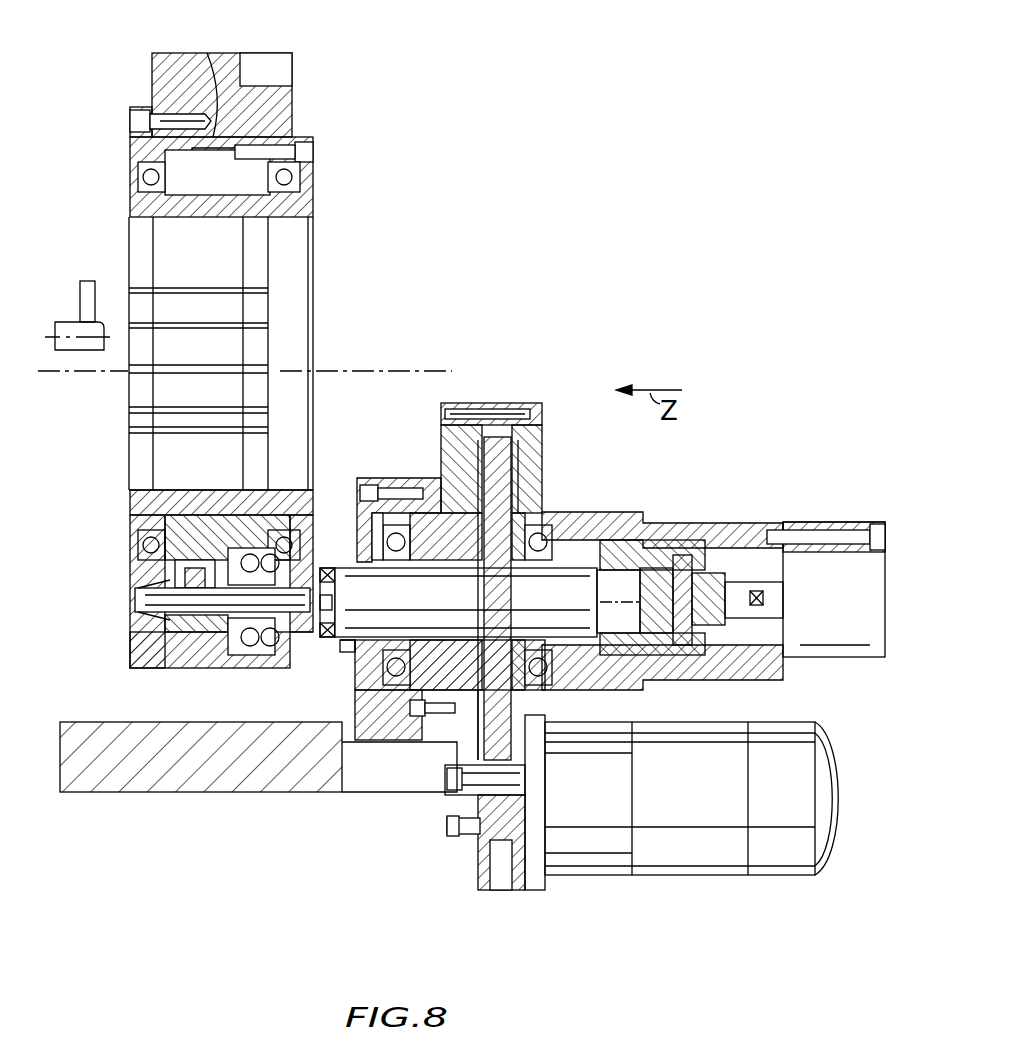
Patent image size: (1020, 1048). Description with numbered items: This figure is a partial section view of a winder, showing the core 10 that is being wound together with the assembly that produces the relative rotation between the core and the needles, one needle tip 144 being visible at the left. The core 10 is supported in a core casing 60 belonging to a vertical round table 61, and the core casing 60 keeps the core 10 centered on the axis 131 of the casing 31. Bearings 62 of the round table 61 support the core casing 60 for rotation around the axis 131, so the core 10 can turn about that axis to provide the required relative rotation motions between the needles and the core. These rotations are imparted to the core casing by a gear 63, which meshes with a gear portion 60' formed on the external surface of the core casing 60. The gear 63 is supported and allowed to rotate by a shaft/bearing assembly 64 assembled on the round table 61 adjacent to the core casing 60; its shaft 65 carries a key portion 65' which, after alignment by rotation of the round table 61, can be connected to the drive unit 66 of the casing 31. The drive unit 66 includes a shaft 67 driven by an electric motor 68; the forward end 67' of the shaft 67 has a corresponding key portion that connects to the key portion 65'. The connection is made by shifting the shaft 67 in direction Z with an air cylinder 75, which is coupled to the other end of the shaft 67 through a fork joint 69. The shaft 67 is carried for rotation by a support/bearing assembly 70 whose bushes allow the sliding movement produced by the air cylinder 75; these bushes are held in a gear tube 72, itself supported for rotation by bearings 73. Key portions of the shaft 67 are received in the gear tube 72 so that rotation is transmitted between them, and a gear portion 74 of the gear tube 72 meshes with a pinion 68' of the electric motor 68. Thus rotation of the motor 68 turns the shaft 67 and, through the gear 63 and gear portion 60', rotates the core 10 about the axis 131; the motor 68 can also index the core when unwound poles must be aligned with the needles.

The core 10 is at (131, 396).
The casing 31 is at (123, 777).
The core casing 60 is at (244, 298).
The gear portion 60' is at (213, 100).
The vertical round table 61 is at (292, 100).
The bearings 62 is at (312, 175).
The gear 63 is at (217, 647).
The shaft/bearing assembly 64 is at (294, 668).
The shaft 65 is at (197, 618).
The key portion 65' is at (379, 504).
The drive unit 66 is at (420, 846).
The shaft 67 is at (559, 558).
The forward end 67' is at (322, 632).
The electric motor 68 is at (681, 823).
The pinion 68' is at (497, 865).
The fork joint 69 is at (718, 545).
The support/bearing assembly 70 is at (566, 476).
The gear tube 72 is at (478, 728).
The bearings 73 is at (395, 692).
The gear portion 74 is at (494, 408).
The air cylinder 75 is at (845, 660).
The axis 131 is at (56, 377).
The tip 144 is at (85, 295).